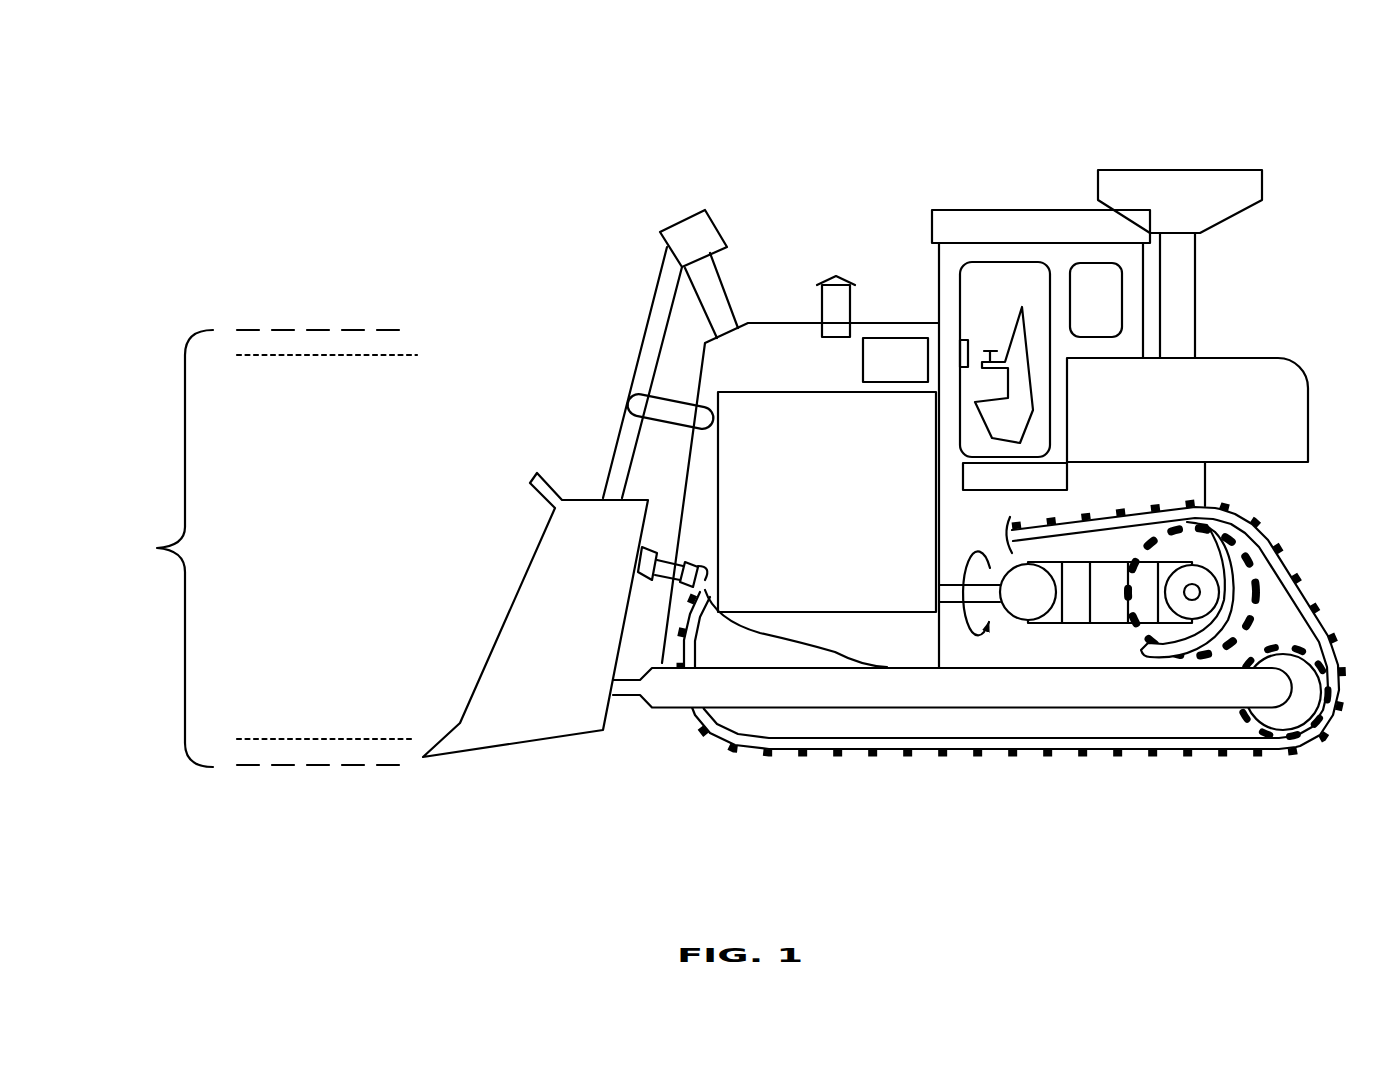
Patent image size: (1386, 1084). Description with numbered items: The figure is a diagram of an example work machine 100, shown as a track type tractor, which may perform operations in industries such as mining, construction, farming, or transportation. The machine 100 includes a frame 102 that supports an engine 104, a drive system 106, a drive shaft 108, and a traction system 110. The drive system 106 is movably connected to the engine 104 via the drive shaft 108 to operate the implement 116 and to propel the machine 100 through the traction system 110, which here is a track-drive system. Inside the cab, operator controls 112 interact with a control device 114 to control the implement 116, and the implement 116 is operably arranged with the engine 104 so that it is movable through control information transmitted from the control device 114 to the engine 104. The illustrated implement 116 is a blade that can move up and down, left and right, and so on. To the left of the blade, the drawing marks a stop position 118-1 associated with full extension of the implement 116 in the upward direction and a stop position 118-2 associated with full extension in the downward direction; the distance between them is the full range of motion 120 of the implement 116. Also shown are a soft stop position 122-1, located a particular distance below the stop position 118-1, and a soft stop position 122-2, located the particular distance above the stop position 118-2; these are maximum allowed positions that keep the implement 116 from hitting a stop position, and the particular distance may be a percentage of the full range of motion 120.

The machine 100 is at (228, 63).
The frame 102 is at (772, 382).
The engine 104 is at (850, 509).
The drive system 106 is at (1100, 640).
The drive shaft 108 is at (947, 600).
The traction system 110 is at (1316, 608).
The operator controls 112 is at (957, 337).
The control device 114 is at (918, 372).
The implement 116 is at (531, 549).
The stop position 118-1 is at (385, 327).
The stop position 118-2 is at (357, 770).
The full range of motion 120 is at (162, 548).
The soft stop position 122-1 is at (348, 360).
The soft stop position 122-2 is at (392, 733).